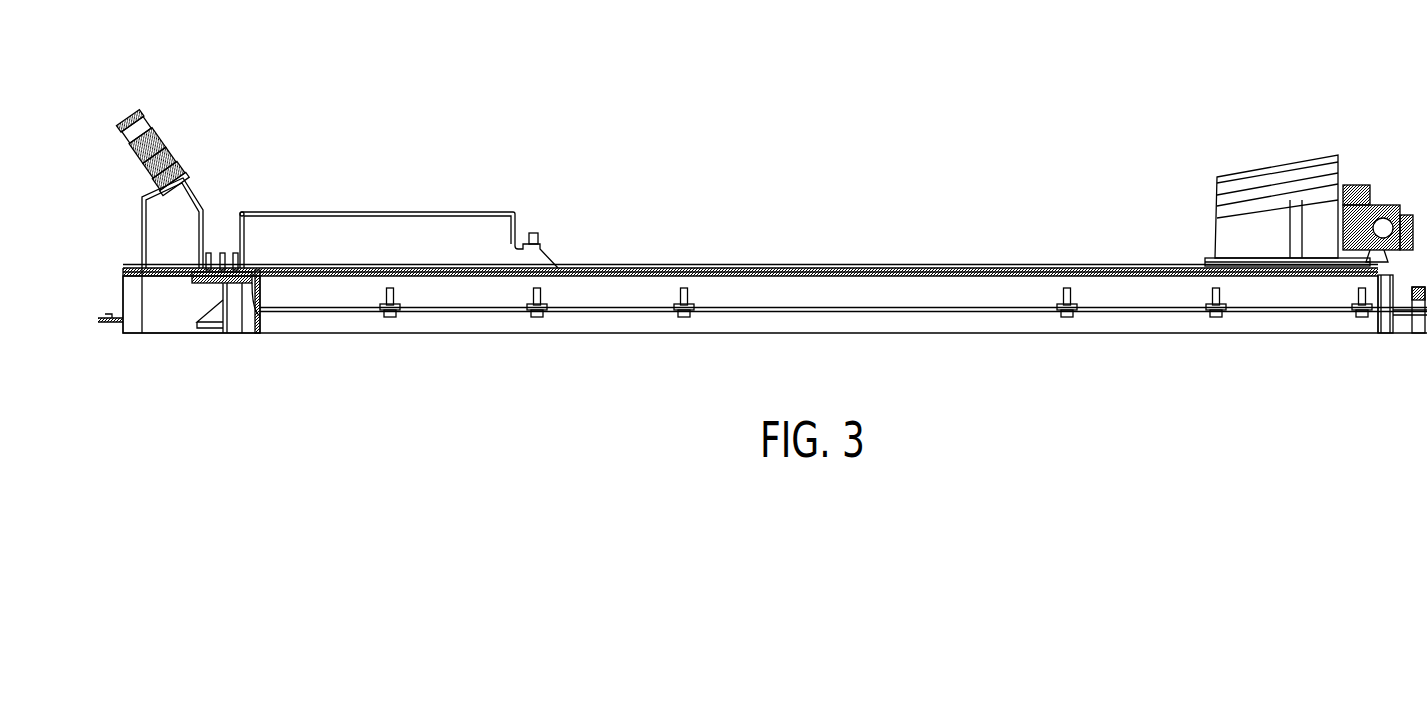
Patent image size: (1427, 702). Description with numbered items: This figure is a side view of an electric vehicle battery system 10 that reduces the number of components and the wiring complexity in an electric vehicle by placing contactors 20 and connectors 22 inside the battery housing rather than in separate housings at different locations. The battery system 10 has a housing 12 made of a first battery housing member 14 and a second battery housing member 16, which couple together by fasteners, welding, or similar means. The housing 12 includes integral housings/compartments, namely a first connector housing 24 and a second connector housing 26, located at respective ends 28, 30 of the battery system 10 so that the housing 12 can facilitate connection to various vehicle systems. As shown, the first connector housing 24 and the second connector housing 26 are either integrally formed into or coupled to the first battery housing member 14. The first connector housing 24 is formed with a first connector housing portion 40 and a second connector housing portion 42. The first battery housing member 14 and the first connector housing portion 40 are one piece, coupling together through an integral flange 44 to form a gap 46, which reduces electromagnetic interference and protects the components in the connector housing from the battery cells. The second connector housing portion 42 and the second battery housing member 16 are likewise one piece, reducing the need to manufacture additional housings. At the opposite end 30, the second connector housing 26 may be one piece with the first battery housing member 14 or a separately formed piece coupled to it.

The electric vehicle battery system 10 is at (965, 156).
The housing 12 is at (603, 364).
The first battery housing member 14 is at (860, 264).
The second battery housing member 16 is at (918, 322).
The contactors 20 is at (165, 96).
The connectors 22 is at (1290, 129).
The first connector housing 24 is at (218, 190).
The second connector housing 26 is at (1278, 170).
The end 28 is at (122, 295).
The opposite end 30 is at (1400, 295).
The first connector housing portion 40 is at (173, 212).
The second connector housing portion 42 is at (180, 305).
The integral flange 44 is at (290, 292).
The gap 46 is at (243, 214).